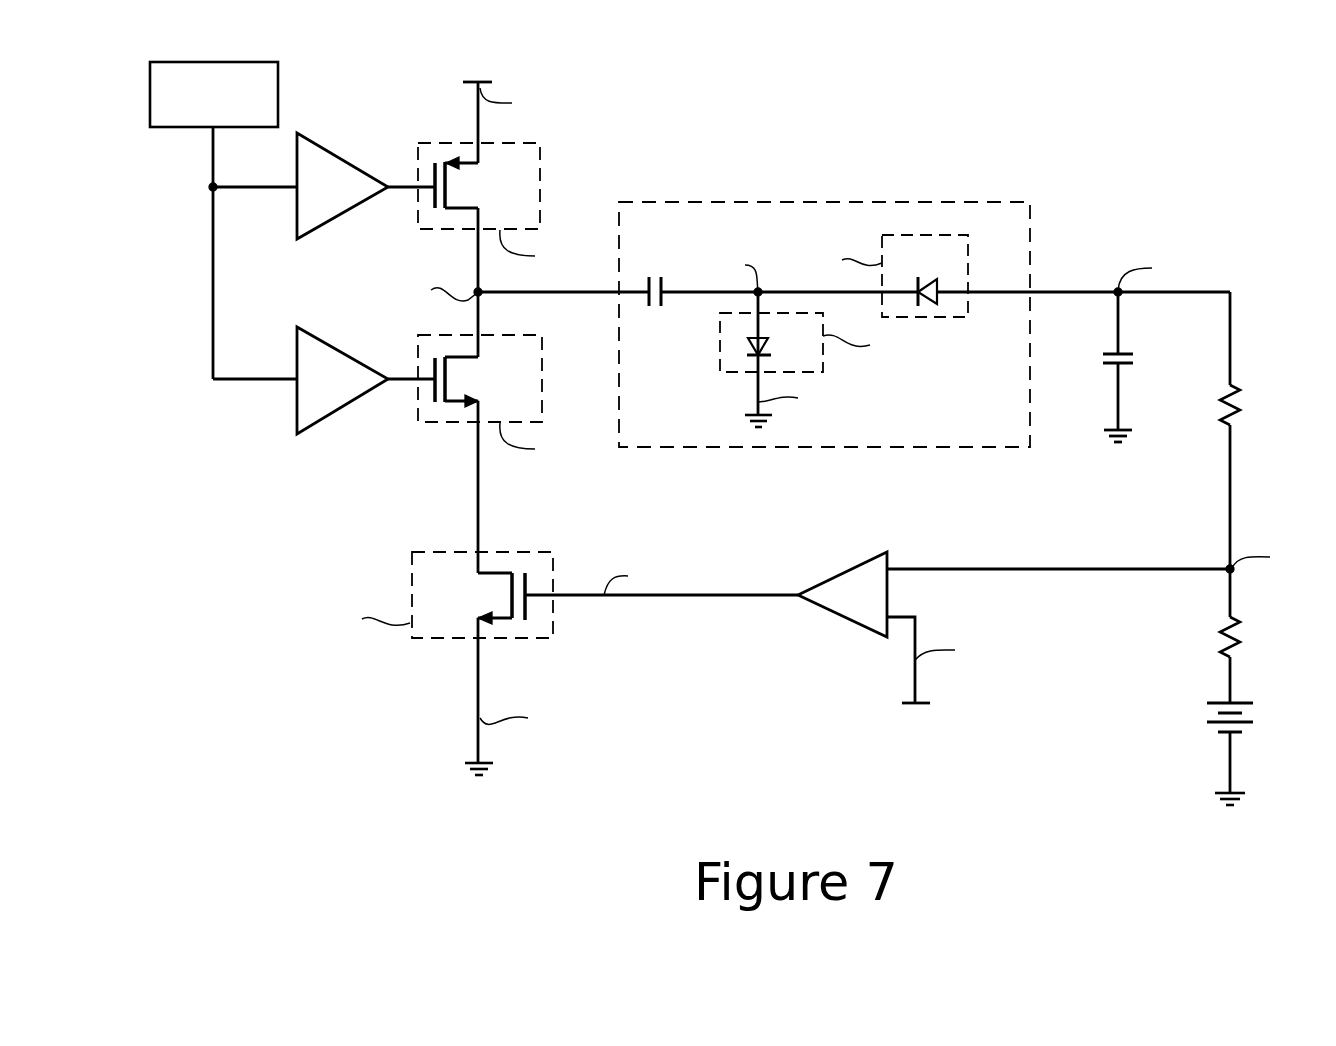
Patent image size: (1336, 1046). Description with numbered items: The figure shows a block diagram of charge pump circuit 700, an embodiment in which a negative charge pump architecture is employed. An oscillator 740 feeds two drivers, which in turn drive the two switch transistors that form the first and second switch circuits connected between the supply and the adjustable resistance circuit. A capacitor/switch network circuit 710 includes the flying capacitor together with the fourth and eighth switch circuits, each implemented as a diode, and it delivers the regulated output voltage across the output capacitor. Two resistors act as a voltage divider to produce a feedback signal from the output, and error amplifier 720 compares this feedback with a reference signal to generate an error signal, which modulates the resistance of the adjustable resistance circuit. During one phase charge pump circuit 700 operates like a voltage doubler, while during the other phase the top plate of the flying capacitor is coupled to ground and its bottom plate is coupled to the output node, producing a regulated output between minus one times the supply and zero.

The charge pump circuit 700 is at (734, 52).
The capacitor/switch network circuit 710 is at (680, 202).
The error amplifier 720 is at (833, 572).
The oscillator 740 is at (190, 128).